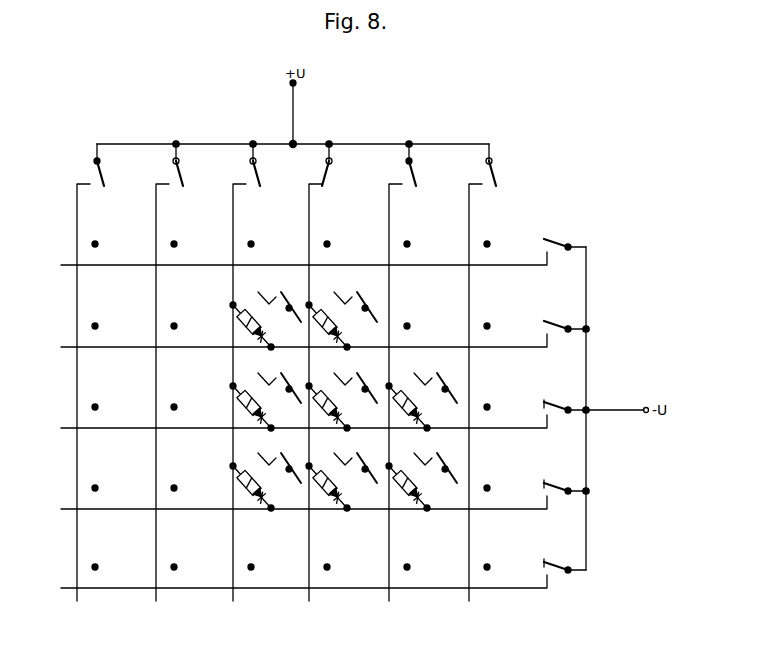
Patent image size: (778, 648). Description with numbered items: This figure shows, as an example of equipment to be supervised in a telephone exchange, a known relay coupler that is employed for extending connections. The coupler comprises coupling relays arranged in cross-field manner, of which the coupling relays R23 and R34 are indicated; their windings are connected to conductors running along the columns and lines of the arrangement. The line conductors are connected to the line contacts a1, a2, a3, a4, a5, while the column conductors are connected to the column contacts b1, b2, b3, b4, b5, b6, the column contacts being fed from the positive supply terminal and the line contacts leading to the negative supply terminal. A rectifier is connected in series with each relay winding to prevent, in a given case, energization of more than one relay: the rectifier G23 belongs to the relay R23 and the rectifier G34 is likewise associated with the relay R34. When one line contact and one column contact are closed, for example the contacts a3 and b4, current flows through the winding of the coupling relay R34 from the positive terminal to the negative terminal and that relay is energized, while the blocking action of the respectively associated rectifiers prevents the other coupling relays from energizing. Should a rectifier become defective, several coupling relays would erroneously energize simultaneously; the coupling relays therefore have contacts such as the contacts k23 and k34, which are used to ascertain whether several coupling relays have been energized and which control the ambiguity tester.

The column contact b1 is at (109, 165).
The column contact b2 is at (188, 165).
The column contact b3 is at (265, 165).
The column contact b4 is at (339, 165).
The column contact b5 is at (421, 165).
The column contact b6 is at (501, 165).
The line contact a1 is at (565, 255).
The line contact a2 is at (565, 337).
The line contact a3 is at (565, 417).
The line contact a4 is at (565, 497).
The line contact a5 is at (565, 576).
The coupling relay contact k23 is at (279, 297).
The coupling relay contact k34 is at (355, 378).
The coupling relay R23 is at (249, 314).
The coupling relay R34 is at (326, 396).
The rectifier G23 is at (271, 330).
The rectifier G34 is at (347, 412).